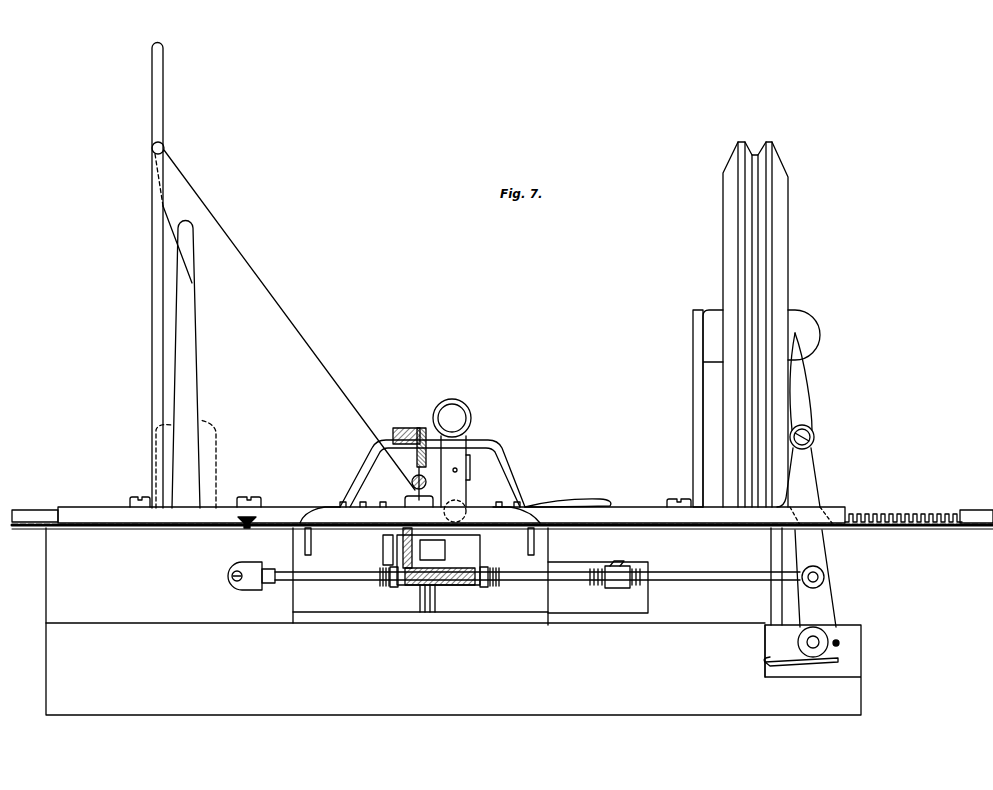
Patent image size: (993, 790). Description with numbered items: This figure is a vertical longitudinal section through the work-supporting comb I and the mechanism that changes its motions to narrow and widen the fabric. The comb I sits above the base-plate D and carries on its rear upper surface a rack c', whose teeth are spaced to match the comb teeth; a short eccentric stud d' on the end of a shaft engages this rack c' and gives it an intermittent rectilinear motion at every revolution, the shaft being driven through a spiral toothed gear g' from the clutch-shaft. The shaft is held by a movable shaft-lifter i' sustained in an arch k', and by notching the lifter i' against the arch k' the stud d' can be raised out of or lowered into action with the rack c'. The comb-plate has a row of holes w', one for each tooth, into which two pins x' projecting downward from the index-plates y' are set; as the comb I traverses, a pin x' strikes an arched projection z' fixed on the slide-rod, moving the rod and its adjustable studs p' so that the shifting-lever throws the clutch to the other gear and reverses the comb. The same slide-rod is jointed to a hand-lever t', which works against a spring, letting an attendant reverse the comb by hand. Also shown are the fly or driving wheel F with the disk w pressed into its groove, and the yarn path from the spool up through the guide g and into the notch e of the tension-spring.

The base-plate D is at (453, 621).
The comb I is at (428, 515).
The row of holes w' is at (502, 534).
The rack c' is at (666, 507).
The arched piece or projection z' is at (247, 519).
The guide g is at (283, 276).
The standard C is at (186, 365).
The index-plates y' is at (472, 510).
The arch k' is at (452, 453).
The shaft-lifter i' is at (459, 472).
The pin or stud d' is at (428, 467).
The notch e is at (459, 511).
The pins x' is at (425, 541).
The gear box G is at (431, 570).
The spiral toothed gear g' is at (514, 576).
The adjustable studs p' is at (567, 568).
The fly or driving wheel F is at (771, 324).
The hand-lever t' is at (804, 429).
The disk w is at (817, 593).